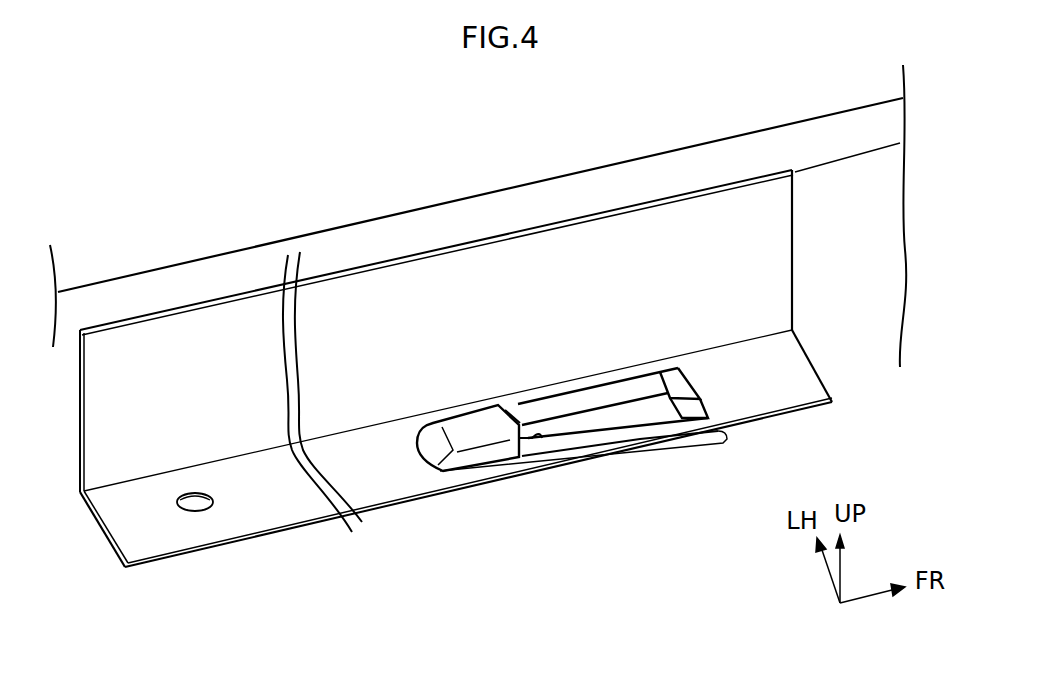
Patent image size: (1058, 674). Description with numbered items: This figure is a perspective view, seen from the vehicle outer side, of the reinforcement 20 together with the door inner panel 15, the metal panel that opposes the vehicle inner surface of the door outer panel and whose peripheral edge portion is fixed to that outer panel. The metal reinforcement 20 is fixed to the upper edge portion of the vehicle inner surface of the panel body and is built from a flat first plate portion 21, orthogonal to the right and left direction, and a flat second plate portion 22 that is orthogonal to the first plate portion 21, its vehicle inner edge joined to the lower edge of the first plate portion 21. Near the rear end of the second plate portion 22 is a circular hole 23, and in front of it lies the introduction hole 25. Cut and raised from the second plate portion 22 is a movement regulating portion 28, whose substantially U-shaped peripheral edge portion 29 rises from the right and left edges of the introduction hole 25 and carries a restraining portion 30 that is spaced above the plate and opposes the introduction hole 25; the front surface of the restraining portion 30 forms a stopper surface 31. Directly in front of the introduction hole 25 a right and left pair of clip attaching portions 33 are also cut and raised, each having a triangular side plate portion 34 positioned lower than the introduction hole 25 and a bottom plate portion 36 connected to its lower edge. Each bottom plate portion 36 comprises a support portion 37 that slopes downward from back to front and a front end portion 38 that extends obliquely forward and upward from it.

The door inner panel 15 is at (793, 133).
The reinforcement 20 is at (780, 282).
The first plate portion 21 is at (780, 230).
The second plate portion 22 is at (795, 367).
The circular hole 23 is at (200, 510).
The introduction hole 25 is at (538, 448).
The movement regulating portion 28 is at (468, 420).
The peripheral edge portion 29 is at (462, 462).
The restraining portion 30 is at (485, 438).
The stopper surface 31 is at (516, 398).
The clip attaching portion 33 is at (715, 442).
The side plate portion 34 is at (655, 375).
The bottom plate portion 36 is at (618, 393).
The support portion 37 is at (567, 393).
The front end portion 38 is at (692, 366).